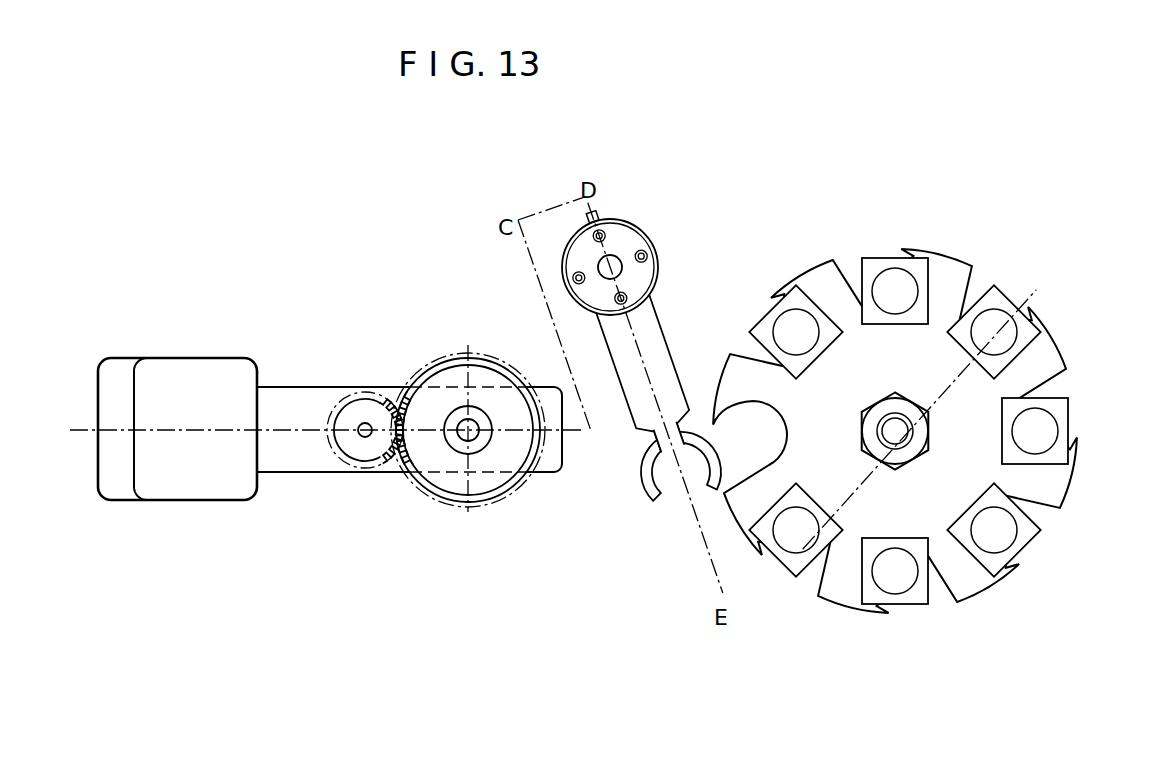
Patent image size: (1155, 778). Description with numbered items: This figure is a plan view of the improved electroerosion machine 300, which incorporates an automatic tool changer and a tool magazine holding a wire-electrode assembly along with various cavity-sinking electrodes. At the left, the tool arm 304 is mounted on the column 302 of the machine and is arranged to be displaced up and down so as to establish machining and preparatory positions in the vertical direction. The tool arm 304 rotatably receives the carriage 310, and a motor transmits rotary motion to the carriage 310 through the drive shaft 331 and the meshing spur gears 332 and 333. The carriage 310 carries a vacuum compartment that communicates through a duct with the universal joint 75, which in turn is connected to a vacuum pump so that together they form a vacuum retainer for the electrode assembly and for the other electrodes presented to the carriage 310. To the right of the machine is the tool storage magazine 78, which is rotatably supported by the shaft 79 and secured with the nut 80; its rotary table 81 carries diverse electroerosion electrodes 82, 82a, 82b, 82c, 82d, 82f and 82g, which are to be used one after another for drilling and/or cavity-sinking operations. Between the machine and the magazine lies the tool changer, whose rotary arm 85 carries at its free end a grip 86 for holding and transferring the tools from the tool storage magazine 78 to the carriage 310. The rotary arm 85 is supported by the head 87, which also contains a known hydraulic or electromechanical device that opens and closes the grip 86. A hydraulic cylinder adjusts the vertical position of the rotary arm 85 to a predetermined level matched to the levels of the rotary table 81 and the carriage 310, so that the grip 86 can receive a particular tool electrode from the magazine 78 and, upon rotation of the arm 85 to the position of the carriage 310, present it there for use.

The tool storage magazine 78 is at (929, 385).
The electroerosion machine 300 is at (425, 257).
The column 302 is at (192, 499).
The tool arm 304 is at (308, 474).
The carriage 310 is at (485, 449).
The drive shaft 331 is at (366, 423).
The spur gear 332 is at (392, 464).
The spur gear 333 is at (470, 494).
The universal joint 75 is at (466, 418).
The rotary arm 85 is at (658, 326).
The grip 86 is at (640, 486).
The head 87 is at (641, 246).
The shaft 79 is at (896, 424).
The nut 80 is at (922, 427).
The rotary table 81 is at (937, 262).
The electroerosion electrode 82 is at (996, 300).
The electroerosion electrode 82a is at (800, 552).
The electroerosion electrode 82b is at (914, 590).
The electroerosion electrode 82c is at (1020, 547).
The electroerosion electrode 82d is at (1052, 430).
The electroerosion electrode 82f is at (872, 258).
The electroerosion electrode 82g is at (793, 292).